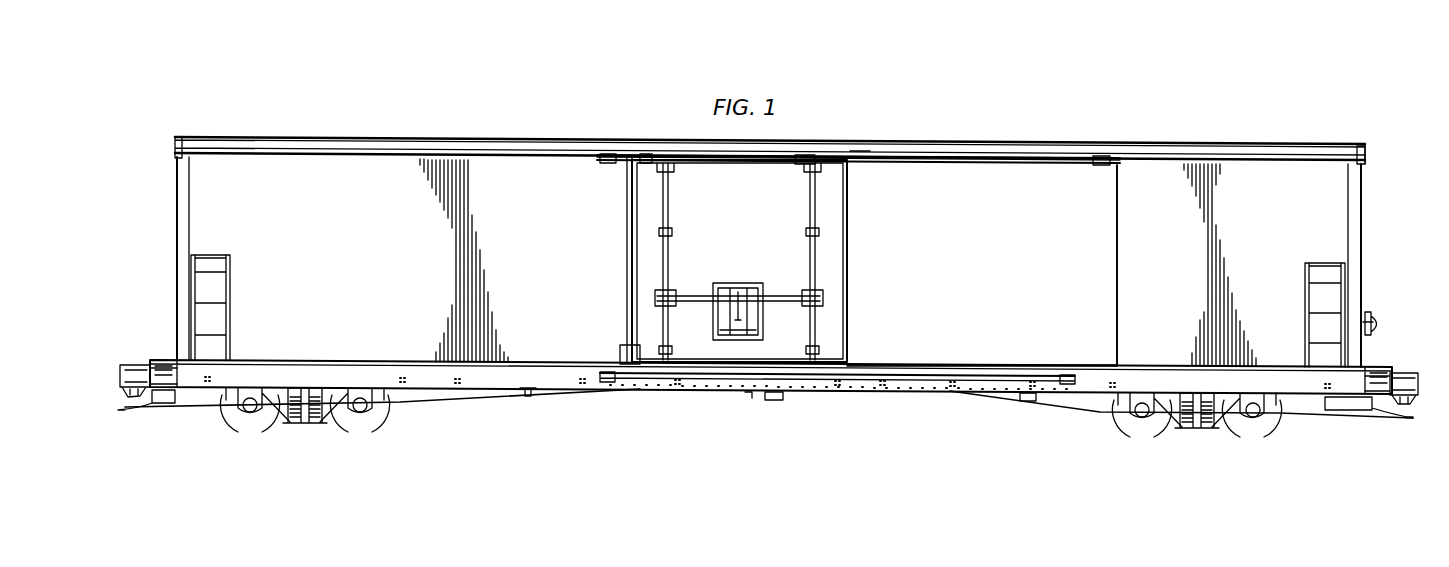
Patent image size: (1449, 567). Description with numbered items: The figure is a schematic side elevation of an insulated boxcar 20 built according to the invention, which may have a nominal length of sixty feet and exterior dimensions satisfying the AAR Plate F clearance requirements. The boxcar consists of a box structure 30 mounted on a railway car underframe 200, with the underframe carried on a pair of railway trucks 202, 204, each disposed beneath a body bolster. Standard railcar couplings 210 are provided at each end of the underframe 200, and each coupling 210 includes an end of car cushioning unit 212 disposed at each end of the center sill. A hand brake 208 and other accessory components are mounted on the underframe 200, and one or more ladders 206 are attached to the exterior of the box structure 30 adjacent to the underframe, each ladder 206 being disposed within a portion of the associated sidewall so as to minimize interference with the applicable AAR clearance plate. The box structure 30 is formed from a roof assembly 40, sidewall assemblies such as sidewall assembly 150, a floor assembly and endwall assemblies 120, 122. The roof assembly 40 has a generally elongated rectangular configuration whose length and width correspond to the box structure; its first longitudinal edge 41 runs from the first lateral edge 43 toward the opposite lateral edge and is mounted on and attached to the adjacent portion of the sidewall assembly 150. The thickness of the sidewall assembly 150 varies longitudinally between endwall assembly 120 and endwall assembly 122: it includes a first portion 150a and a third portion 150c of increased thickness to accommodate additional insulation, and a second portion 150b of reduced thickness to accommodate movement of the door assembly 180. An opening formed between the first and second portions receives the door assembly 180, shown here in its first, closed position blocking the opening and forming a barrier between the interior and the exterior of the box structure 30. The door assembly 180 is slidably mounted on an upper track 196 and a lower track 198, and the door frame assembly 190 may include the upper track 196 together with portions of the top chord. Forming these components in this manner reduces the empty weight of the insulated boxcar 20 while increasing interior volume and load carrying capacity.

The insulated boxcar 20 is at (259, 114).
The box structure 30 is at (1152, 210).
The roof assembly 40 is at (499, 134).
The first longitudinal edge 41 is at (861, 155).
The first lateral edge 43 is at (176, 140).
The endwall assembly 120 is at (177, 228).
The endwall assembly 122 is at (1370, 212).
The sidewall assembly 150 is at (1000, 280).
The first portion 150a is at (358, 178).
The second portion 150b is at (1006, 181).
The third portion 150c is at (1279, 184).
The door assembly 180 is at (758, 230).
The door frame assembly 190 is at (632, 258).
The upper track 196 is at (892, 165).
The lower track 198 is at (1021, 372).
The railway car underframe 200 is at (480, 398).
The railway truck 202 is at (299, 434).
The railway truck 204 is at (1194, 438).
The ladder 206 is at (214, 265).
The hand brake 208 is at (1378, 310).
The railcar coupling 210 is at (128, 362).
The end of car cushioning unit 212 is at (155, 402).